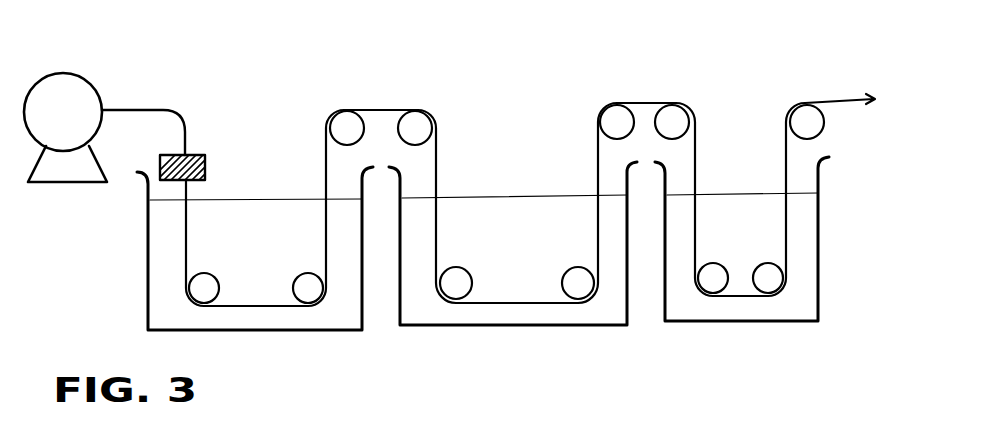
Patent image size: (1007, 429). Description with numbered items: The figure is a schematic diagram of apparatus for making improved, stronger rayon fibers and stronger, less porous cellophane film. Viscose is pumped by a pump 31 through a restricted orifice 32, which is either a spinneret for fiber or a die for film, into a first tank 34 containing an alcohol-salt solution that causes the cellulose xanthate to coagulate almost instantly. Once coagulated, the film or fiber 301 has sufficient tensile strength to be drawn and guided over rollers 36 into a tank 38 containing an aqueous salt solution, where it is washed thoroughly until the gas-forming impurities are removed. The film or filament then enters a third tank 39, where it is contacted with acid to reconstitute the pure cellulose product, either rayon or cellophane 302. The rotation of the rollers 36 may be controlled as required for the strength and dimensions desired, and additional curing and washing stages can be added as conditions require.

The pump 31 is at (104, 109).
The restricted orifice 32 is at (201, 148).
The first tank 34 is at (209, 253).
The rollers 36 is at (577, 110).
The tank 38 is at (492, 278).
The third tank 39 is at (742, 273).
The film or fiber 301 is at (495, 174).
The cellophane 302 is at (812, 80).